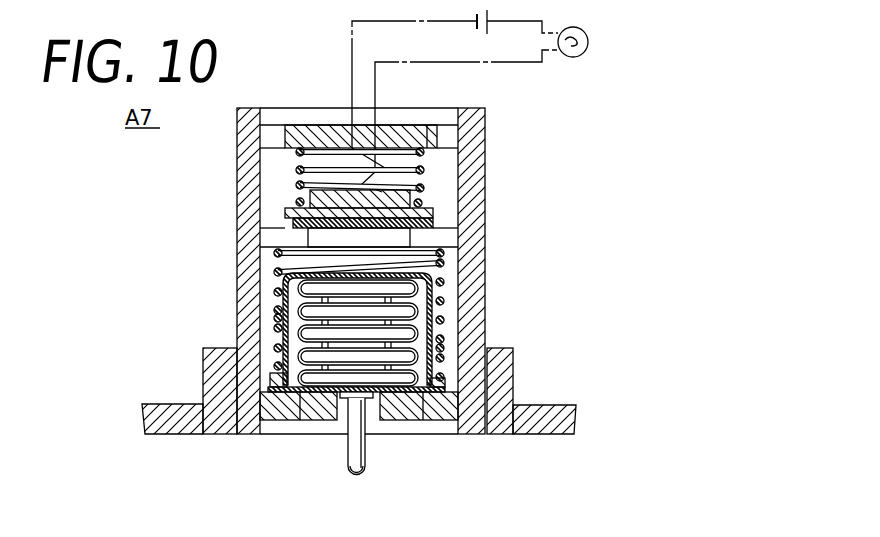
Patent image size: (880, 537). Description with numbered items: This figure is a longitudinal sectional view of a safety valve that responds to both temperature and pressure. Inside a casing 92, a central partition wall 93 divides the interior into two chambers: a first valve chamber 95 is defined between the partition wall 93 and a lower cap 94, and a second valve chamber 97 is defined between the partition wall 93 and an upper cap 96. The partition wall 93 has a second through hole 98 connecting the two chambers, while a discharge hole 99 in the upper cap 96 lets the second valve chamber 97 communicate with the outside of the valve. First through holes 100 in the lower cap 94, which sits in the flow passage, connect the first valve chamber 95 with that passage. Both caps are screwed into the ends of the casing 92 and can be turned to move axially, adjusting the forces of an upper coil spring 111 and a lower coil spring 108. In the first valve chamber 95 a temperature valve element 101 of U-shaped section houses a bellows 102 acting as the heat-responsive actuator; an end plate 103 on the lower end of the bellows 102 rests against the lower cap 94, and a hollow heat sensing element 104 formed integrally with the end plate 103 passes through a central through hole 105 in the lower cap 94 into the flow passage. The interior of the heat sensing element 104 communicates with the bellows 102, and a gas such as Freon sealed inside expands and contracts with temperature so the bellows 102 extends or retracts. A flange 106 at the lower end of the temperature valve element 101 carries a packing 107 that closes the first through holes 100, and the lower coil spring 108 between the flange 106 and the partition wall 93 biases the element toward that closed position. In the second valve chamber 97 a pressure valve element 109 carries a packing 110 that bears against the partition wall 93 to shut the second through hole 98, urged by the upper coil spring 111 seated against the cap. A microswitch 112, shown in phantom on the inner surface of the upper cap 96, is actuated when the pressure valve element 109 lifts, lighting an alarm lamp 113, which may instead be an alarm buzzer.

The casing 92 is at (470, 270).
The central partition wall 93 is at (410, 241).
The lower cap 94 is at (407, 408).
The first valve chamber 95 is at (446, 329).
The upper cap 96 is at (428, 132).
The second valve chamber 97 is at (442, 163).
The second through hole 98 is at (287, 242).
The discharge hole 99 is at (448, 135).
The first through holes 100 is at (278, 408).
The temperature valve element 101 is at (440, 346).
The bellows 102 is at (432, 292).
The end plate 103 is at (323, 422).
The heat sensing element 104 is at (357, 469).
The through hole 105 is at (370, 425).
The flange 106 is at (275, 385).
The packing 107 is at (432, 389).
The lower coil spring 108 is at (278, 318).
The pressure valve element 109 is at (410, 198).
The packing 110 is at (288, 225).
The upper coil spring 111 is at (318, 147).
The microswitch 112 is at (392, 118).
The alarm lamp 113 is at (590, 42).